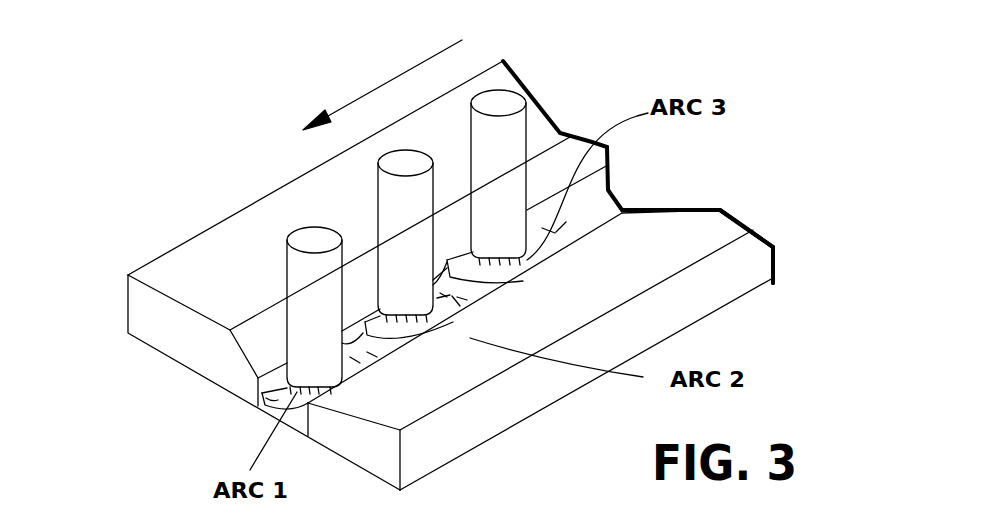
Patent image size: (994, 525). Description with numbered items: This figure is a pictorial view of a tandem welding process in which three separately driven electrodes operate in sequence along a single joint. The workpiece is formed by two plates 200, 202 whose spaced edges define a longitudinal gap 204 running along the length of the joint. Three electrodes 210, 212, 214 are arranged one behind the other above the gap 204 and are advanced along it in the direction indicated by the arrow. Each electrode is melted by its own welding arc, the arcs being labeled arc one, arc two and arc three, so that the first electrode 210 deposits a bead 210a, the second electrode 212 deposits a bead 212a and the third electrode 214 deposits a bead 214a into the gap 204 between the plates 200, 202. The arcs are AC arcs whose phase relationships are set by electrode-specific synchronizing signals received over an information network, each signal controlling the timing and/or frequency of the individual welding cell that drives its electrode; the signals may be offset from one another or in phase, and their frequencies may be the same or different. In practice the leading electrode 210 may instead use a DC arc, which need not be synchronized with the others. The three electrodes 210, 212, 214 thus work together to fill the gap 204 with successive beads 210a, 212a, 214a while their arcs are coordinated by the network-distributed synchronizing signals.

The plate 200 is at (358, 440).
The plate 202 is at (162, 332).
The longitudinal gap 204 is at (618, 218).
The electrode 210 is at (313, 242).
The bead 210a is at (290, 392).
The electrode 212 is at (405, 160).
The bead 212a is at (470, 311).
The electrode 214 is at (497, 100).
The bead 214a is at (775, 277).